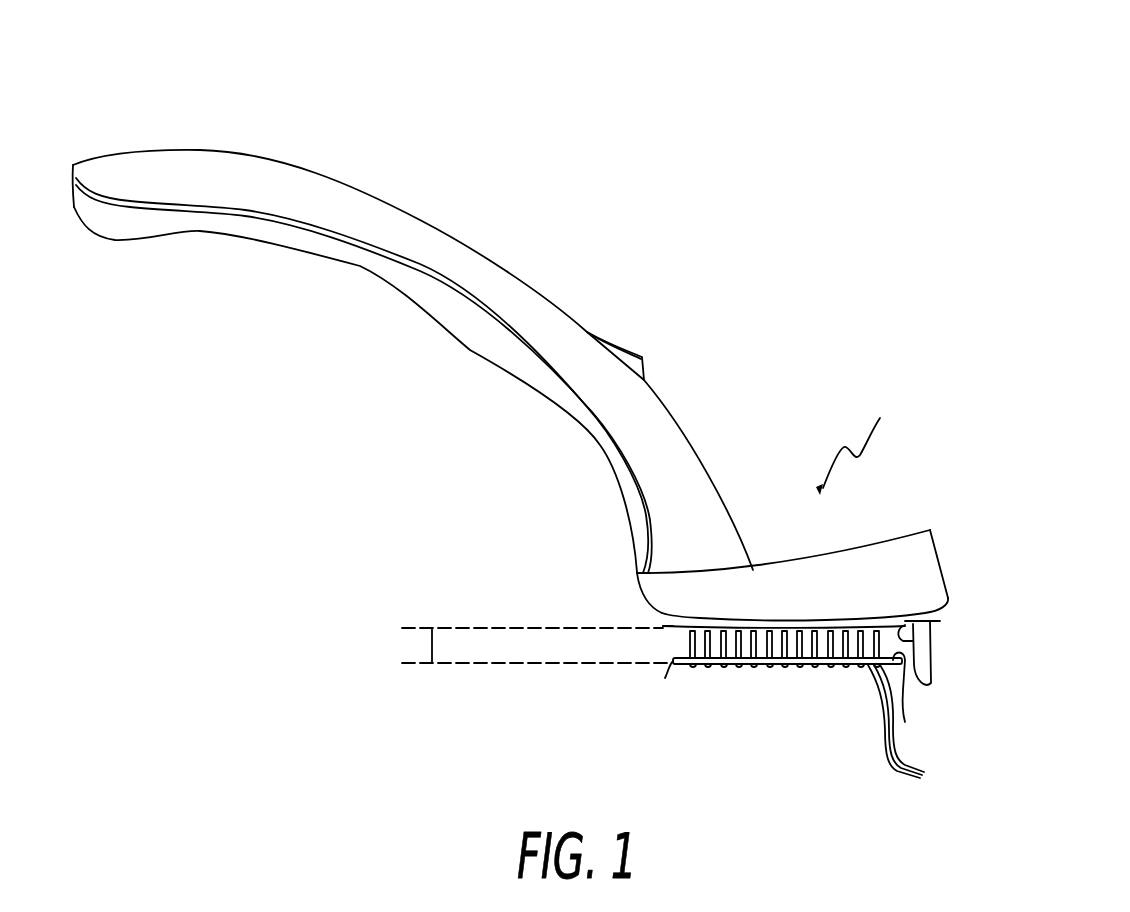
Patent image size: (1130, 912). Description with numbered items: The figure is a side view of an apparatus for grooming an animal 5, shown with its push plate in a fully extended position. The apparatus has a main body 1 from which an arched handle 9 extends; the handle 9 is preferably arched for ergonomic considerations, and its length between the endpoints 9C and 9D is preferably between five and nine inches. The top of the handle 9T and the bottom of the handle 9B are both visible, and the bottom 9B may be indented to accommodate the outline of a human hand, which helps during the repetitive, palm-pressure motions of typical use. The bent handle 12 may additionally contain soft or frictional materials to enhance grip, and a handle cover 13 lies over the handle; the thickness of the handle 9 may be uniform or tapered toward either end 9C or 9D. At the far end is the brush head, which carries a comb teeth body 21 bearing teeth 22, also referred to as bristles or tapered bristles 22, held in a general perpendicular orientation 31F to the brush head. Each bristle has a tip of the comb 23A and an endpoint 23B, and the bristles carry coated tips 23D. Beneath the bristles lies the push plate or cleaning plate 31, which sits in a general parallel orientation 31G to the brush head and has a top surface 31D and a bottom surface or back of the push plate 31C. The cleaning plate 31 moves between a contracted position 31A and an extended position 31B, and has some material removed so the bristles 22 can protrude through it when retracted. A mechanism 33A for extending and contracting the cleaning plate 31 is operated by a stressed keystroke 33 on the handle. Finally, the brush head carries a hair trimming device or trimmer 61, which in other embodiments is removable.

The main body 1 is at (580, 162).
The apparatus for grooming an animal 5 is at (535, 111).
The handle 9 is at (299, 112).
The top of the handle 9T is at (133, 150).
The bottom of the handle 9B is at (227, 233).
The endpoint of the handle 9C is at (107, 213).
The endpoint of the handle 9D is at (637, 572).
The bent handle 12 is at (457, 320).
The handle cover 13 is at (440, 245).
The stressed keystroke 33 is at (648, 372).
The mechanism for extending and contracting the cleaning plate 33A is at (624, 325).
The comb teeth body 21 is at (978, 581).
The teeth 22 is at (668, 647).
The push plate 31 is at (665, 666).
The contracted position 31A is at (407, 622).
The extended position 31B is at (409, 668).
The bottom surface of the push plate 31C is at (903, 712).
The top surface 31D is at (680, 667).
The perpendicular orientation 31F is at (937, 623).
The general parallel orientation 31G is at (434, 645).
The trimmer 61 is at (937, 640).
The tip of the comb 23A is at (741, 680).
The endpoint 23B is at (920, 777).
The coated tips 23D is at (800, 666).